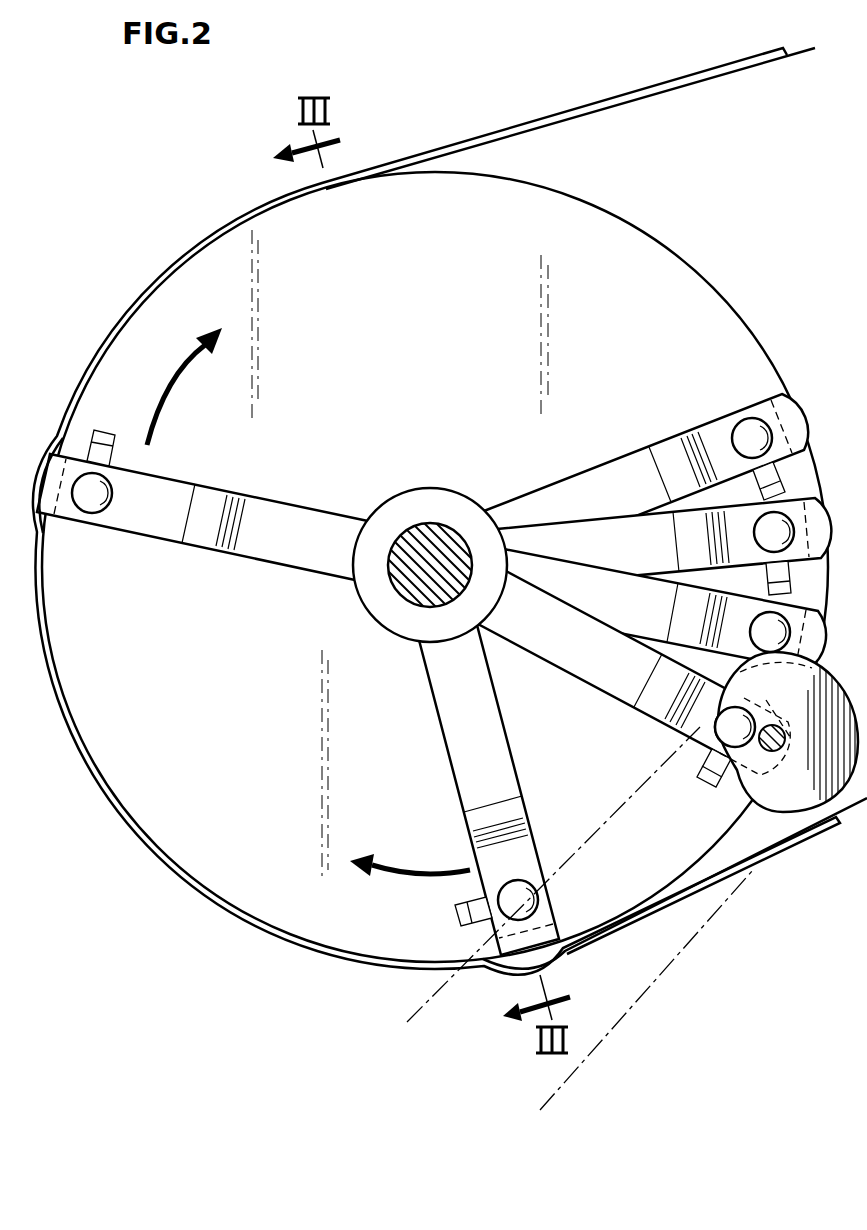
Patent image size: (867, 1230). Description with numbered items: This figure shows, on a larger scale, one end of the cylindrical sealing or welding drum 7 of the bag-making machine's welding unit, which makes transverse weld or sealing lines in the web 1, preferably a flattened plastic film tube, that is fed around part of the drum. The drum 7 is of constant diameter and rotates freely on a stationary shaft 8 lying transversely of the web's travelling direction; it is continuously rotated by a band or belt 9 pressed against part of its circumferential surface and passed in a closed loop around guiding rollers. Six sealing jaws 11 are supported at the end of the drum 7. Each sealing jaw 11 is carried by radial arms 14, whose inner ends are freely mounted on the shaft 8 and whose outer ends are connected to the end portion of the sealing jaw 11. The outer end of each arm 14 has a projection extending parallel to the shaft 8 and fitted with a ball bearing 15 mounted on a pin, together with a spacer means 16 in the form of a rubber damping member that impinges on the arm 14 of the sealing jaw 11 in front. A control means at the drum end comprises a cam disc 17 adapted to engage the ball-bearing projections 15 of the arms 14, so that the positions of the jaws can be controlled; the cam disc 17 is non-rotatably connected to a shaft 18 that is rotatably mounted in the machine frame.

The web 1 is at (764, 70).
The welding drum 7 is at (652, 252).
The stationary shaft 8 is at (440, 540).
The belt 9 is at (608, 94).
The sealing jaw 11 is at (50, 456).
The radial arm 14 is at (292, 510).
The ball bearing 15 is at (92, 502).
The spacer means 16 is at (108, 433).
The cam disc 17 is at (840, 664).
The shaft 18 is at (778, 734).